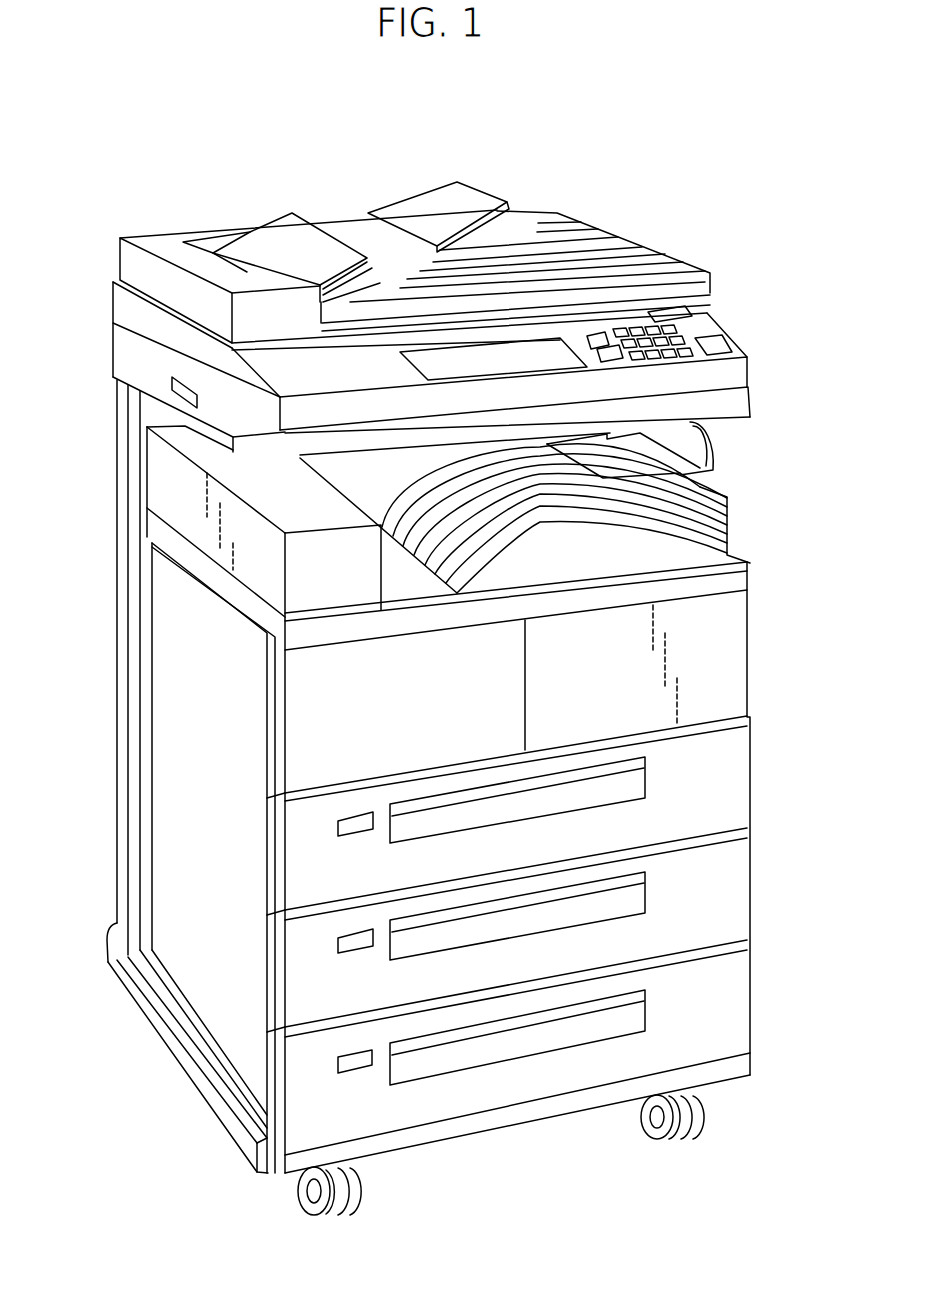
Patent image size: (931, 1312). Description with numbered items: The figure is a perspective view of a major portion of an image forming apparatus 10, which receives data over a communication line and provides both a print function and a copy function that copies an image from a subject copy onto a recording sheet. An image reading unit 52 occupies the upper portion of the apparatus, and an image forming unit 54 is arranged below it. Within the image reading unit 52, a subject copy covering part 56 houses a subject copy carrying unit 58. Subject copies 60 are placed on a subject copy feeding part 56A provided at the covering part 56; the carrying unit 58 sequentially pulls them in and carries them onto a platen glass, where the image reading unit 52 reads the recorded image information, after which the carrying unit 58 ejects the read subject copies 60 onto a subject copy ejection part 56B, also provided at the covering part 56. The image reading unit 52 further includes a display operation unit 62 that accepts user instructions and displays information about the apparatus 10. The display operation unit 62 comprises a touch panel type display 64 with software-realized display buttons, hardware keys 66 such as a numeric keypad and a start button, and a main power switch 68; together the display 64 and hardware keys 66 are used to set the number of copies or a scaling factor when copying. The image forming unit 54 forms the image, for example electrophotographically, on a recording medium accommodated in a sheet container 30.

The image forming apparatus 10 is at (637, 184).
The sheet container 30 is at (735, 771).
The image reading unit 52 is at (124, 310).
The image forming unit 54 is at (190, 978).
The subject copy covering part 56 is at (114, 260).
The subject copy feeding part 56A is at (427, 210).
The subject copy ejection part 56B is at (530, 257).
The subject copy carrying unit 58 is at (195, 304).
The subject copies 60 is at (325, 233).
The display operation unit 62 is at (714, 322).
The touch panel type display 64 is at (428, 363).
The hardware keys 66 is at (682, 313).
The main power switch 68 is at (723, 342).